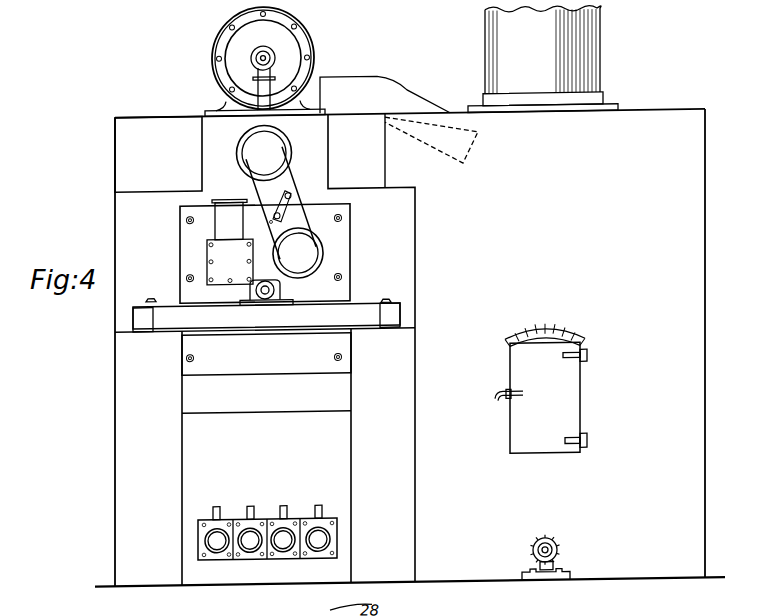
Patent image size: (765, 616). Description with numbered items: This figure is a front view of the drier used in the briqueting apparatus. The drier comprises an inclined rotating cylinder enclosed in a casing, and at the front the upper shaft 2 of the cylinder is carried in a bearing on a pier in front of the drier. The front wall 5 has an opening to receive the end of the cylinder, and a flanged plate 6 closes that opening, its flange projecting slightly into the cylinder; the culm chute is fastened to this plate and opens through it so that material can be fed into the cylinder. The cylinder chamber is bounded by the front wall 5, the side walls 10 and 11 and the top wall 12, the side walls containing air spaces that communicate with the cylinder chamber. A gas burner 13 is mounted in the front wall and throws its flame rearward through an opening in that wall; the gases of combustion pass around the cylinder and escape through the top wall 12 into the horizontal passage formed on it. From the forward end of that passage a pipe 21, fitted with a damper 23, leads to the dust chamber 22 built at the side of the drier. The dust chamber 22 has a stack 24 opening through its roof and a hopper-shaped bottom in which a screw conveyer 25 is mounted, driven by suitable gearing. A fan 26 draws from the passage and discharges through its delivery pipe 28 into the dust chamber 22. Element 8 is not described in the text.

The upper shaft 2 is at (262, 310).
The front wall 5 is at (266, 457).
The flanged plate 6 is at (350, 262).
The valve box 8 is at (222, 229).
The side wall 10 is at (114, 441).
The side wall 11 is at (417, 512).
The top wall 12 is at (152, 193).
The gas burner 13 is at (316, 520).
The pipe 21 is at (278, 180).
The dust chamber 22 is at (541, 344).
The damper 23 is at (290, 210).
The stack 24 is at (598, 68).
The screw conveyer 25 is at (553, 578).
The fan 26 is at (306, 40).
The delivery pipe 28 is at (380, 93).